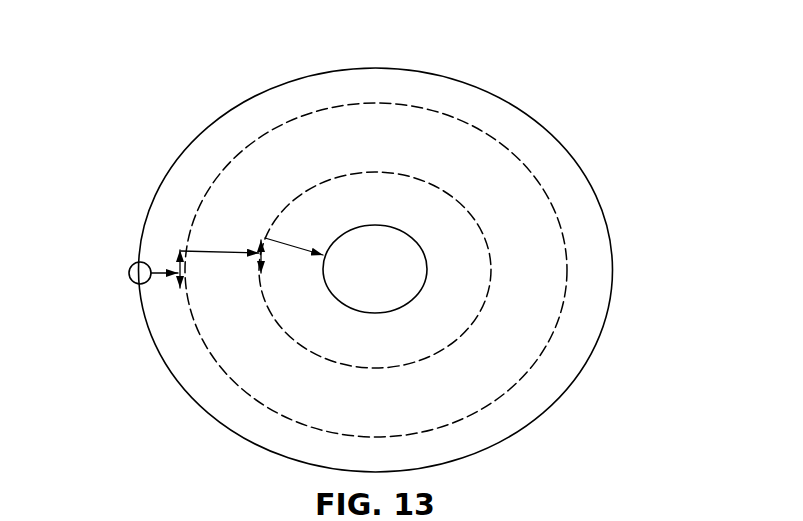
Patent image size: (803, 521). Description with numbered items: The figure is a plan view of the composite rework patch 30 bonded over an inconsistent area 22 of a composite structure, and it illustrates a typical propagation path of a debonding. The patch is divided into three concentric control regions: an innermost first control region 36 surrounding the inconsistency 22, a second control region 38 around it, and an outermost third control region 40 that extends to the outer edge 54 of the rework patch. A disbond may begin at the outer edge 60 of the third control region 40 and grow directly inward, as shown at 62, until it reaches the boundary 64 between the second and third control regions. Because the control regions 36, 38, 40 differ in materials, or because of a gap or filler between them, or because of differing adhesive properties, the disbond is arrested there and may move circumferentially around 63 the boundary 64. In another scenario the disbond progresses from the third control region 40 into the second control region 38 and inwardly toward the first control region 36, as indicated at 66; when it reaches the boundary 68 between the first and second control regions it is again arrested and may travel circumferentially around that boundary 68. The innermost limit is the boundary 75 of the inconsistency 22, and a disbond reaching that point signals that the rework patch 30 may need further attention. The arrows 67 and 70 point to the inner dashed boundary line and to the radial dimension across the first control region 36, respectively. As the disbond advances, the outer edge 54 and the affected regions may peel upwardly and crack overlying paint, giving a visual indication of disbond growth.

The composite rework patch 30 is at (395, 270).
The inconsistent area 22 is at (492, 269).
The first control region 36 is at (372, 107).
The second control region 38 is at (171, 383).
The third control region 40 is at (609, 362).
The outer edge of the rework patch 54 is at (81, 298).
The outer edge of the third control region 60 is at (113, 258).
The inward disbond growth 62 is at (139, 237).
The circumferential disbond movement 63 is at (126, 306).
The boundary between second and third control regions 64 is at (405, 272).
The inward disbond progression 66 is at (189, 197).
The inner boundary line 67 is at (413, 317).
The boundary between first and second control regions 68 is at (171, 316).
The radial dimension 70 is at (287, 157).
The boundary of the inconsistency 75 is at (271, 388).